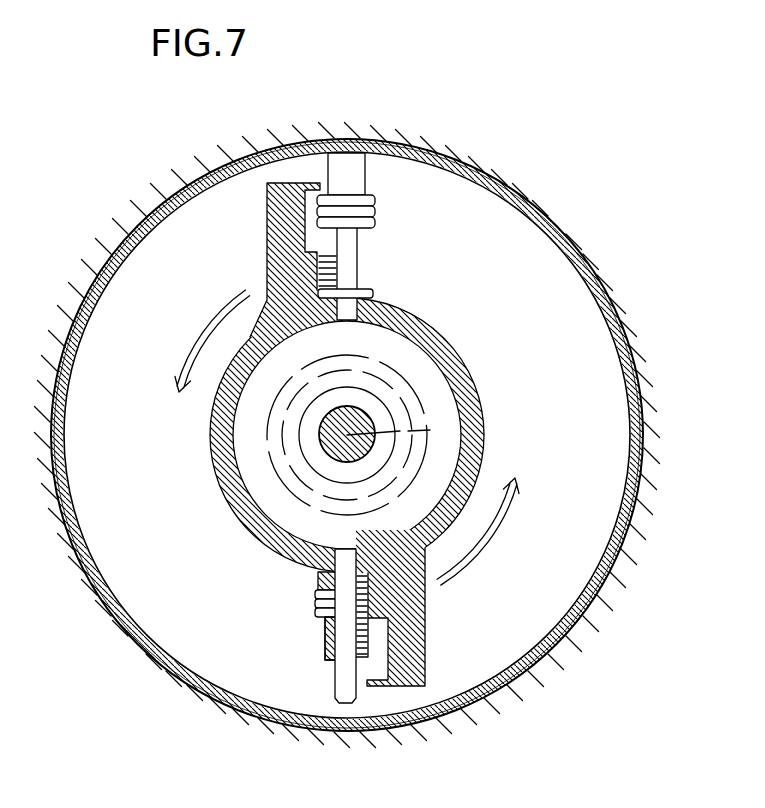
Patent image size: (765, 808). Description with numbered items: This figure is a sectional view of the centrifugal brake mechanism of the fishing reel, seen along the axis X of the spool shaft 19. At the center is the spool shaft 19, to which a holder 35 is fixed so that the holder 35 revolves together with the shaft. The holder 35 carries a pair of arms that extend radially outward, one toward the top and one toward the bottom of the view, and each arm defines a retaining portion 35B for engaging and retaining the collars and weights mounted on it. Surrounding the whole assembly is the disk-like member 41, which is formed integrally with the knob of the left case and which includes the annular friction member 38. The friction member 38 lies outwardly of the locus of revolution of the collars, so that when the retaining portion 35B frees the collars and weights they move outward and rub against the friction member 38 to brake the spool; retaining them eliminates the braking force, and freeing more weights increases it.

The spool shaft 19 is at (360, 420).
The axis of the spool shaft X is at (400, 429).
The holder 35 is at (213, 471).
The retaining portions 35B is at (372, 291).
The annular friction member 38 is at (590, 286).
The disk-like member 41 is at (137, 247).